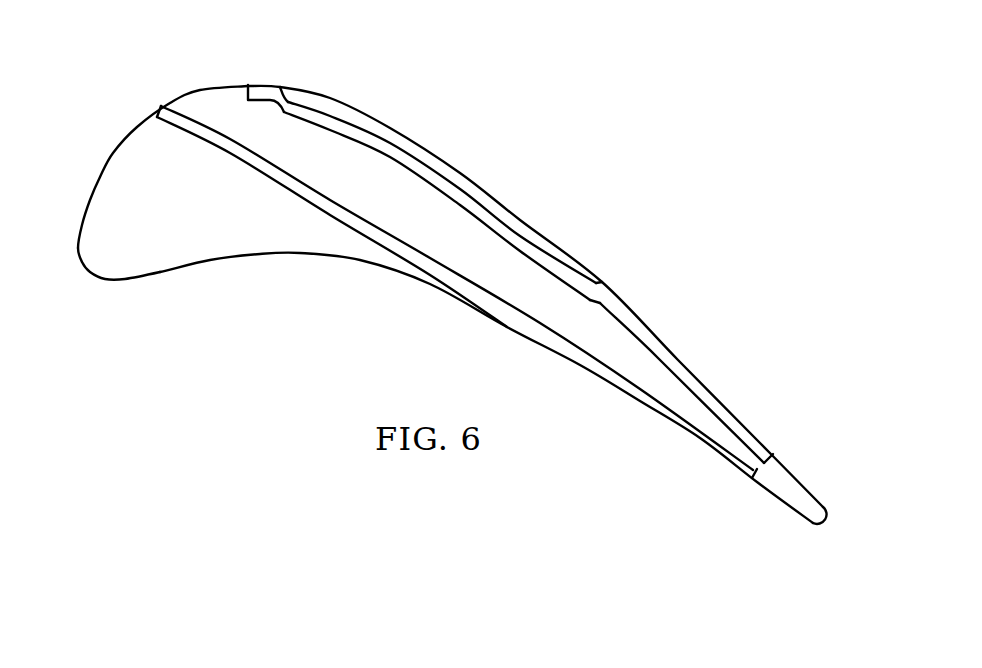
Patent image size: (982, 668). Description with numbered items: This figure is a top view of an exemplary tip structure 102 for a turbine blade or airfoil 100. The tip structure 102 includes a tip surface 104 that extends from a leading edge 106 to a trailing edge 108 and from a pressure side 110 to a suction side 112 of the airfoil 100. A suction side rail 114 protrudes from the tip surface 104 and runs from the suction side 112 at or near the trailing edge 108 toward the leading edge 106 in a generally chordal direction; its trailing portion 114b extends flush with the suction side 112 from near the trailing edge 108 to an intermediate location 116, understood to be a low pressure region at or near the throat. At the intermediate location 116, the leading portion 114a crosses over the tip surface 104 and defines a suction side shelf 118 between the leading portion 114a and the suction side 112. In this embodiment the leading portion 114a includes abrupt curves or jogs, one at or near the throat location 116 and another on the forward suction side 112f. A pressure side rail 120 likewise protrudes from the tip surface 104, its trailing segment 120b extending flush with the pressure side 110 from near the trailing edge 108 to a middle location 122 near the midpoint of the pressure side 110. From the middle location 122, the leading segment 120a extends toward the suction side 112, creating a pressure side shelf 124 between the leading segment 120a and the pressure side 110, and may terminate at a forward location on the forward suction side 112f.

The airfoil 100 is at (617, 125).
The tip structure 102 is at (448, 338).
The tip surface 104 is at (98, 184).
The leading edge 106 is at (81, 294).
The trailing edge 108 is at (832, 539).
The pressure side 110 is at (428, 288).
The suction side 112 is at (505, 208).
The forward suction side 112f is at (218, 84).
The suction side rail 114 is at (417, 143).
The leading portion 114a is at (370, 130).
The trailing portion 114b is at (740, 421).
The intermediate location 116 is at (599, 259).
The suction side shelf 118 is at (457, 173).
The pressure side rail 120 is at (376, 258).
The leading segment 120a is at (272, 181).
The trailing segment 120b is at (685, 432).
The middle location 122 is at (602, 413).
The pressure side shelf 124 is at (287, 255).